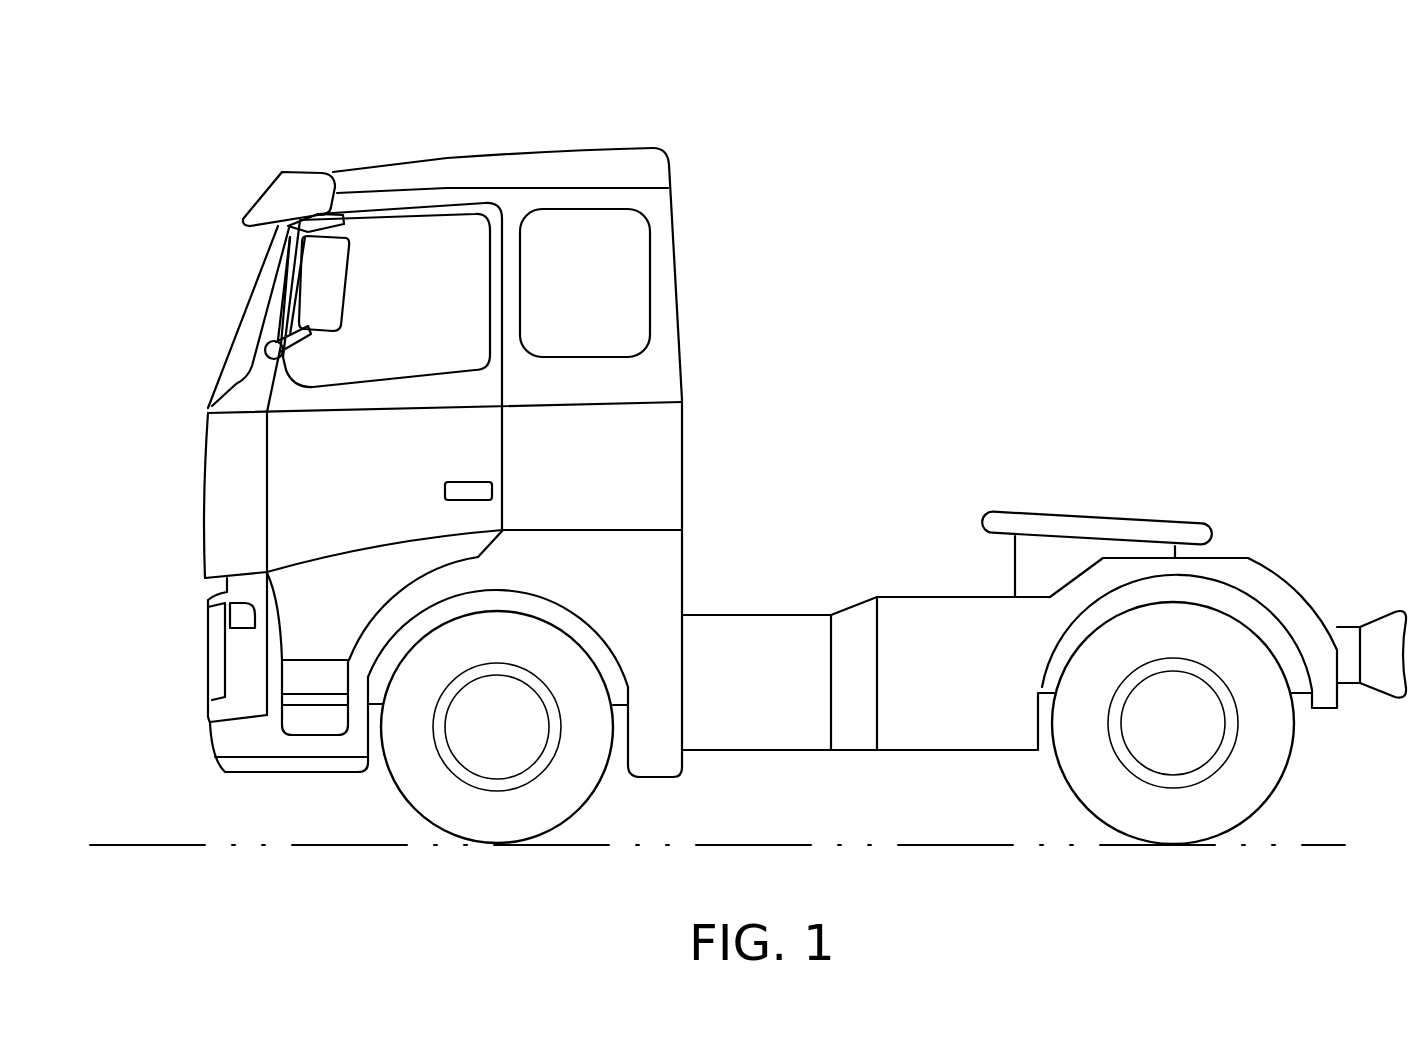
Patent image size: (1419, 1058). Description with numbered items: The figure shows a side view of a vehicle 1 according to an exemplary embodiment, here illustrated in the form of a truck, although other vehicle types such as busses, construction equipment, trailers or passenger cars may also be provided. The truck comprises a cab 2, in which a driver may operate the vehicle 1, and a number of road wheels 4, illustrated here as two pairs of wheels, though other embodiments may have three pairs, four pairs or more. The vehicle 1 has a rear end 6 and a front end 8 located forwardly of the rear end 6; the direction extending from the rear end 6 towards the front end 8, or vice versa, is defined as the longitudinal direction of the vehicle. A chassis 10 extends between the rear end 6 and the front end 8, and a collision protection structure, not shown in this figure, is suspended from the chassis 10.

The vehicle 1 is at (975, 204).
The cab 2 is at (438, 130).
The road wheels 4 is at (502, 813).
The rear end 6 is at (1318, 524).
The front end 8 is at (160, 473).
The chassis 10 is at (757, 668).